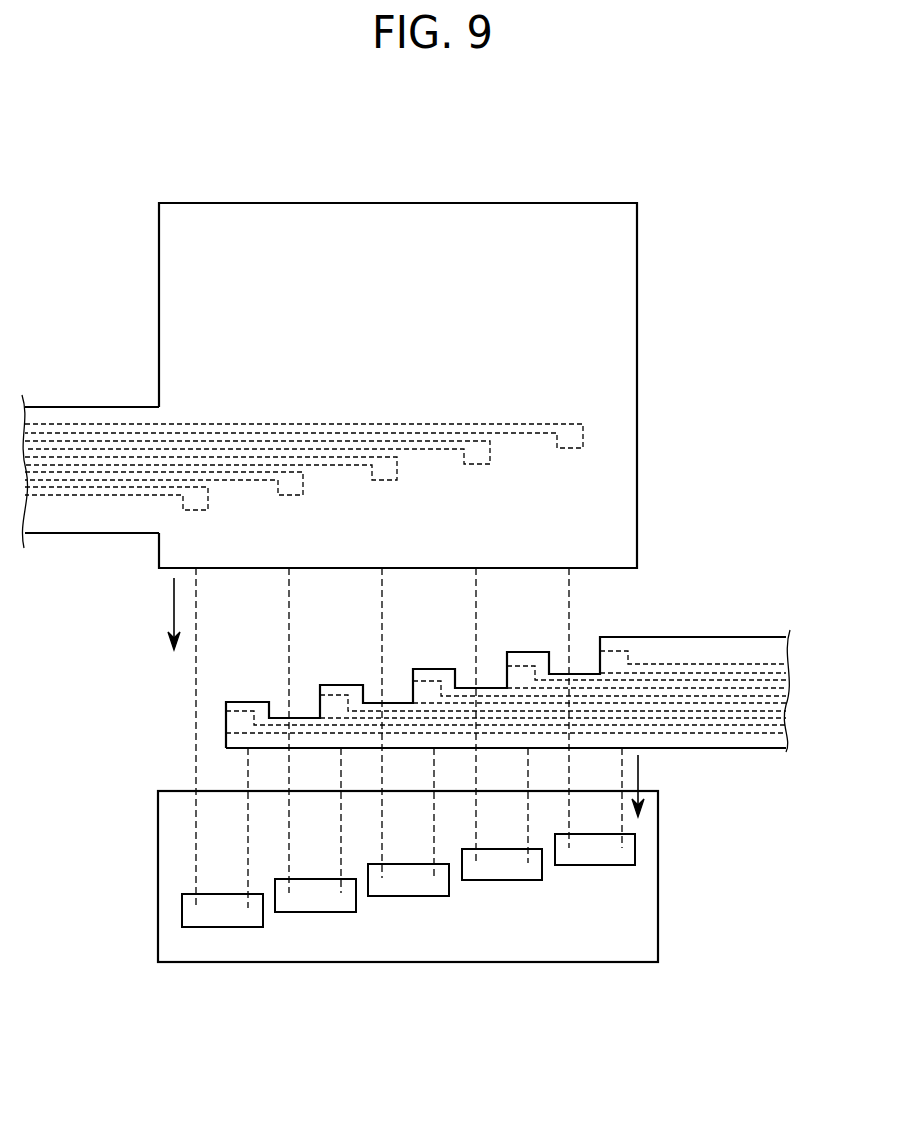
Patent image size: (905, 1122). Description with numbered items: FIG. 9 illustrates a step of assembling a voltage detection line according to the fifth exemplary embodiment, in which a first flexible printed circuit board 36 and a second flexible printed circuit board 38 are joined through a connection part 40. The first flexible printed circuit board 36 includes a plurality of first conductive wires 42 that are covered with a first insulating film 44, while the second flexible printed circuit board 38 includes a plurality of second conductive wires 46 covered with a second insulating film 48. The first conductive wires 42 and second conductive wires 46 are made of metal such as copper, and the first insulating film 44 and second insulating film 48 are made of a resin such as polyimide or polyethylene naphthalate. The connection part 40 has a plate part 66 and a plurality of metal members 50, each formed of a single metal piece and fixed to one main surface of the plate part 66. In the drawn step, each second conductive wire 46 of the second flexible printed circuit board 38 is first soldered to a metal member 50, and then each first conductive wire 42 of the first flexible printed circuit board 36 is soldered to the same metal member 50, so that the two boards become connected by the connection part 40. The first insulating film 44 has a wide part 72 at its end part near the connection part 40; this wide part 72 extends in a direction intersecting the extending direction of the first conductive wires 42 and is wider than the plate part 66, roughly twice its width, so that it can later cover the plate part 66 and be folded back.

The first flexible printed circuit board 36 is at (640, 487).
The second flexible printed circuit board 38 is at (747, 638).
The connection part 40 is at (658, 963).
The first conductive wire 42 is at (567, 425).
The first insulating film 44 is at (93, 407).
The second conductive wire 46 is at (745, 665).
The second insulating film 48 is at (722, 749).
The metal member 50 is at (635, 848).
The plate part 66 is at (658, 908).
The wide part 72 is at (184, 292).